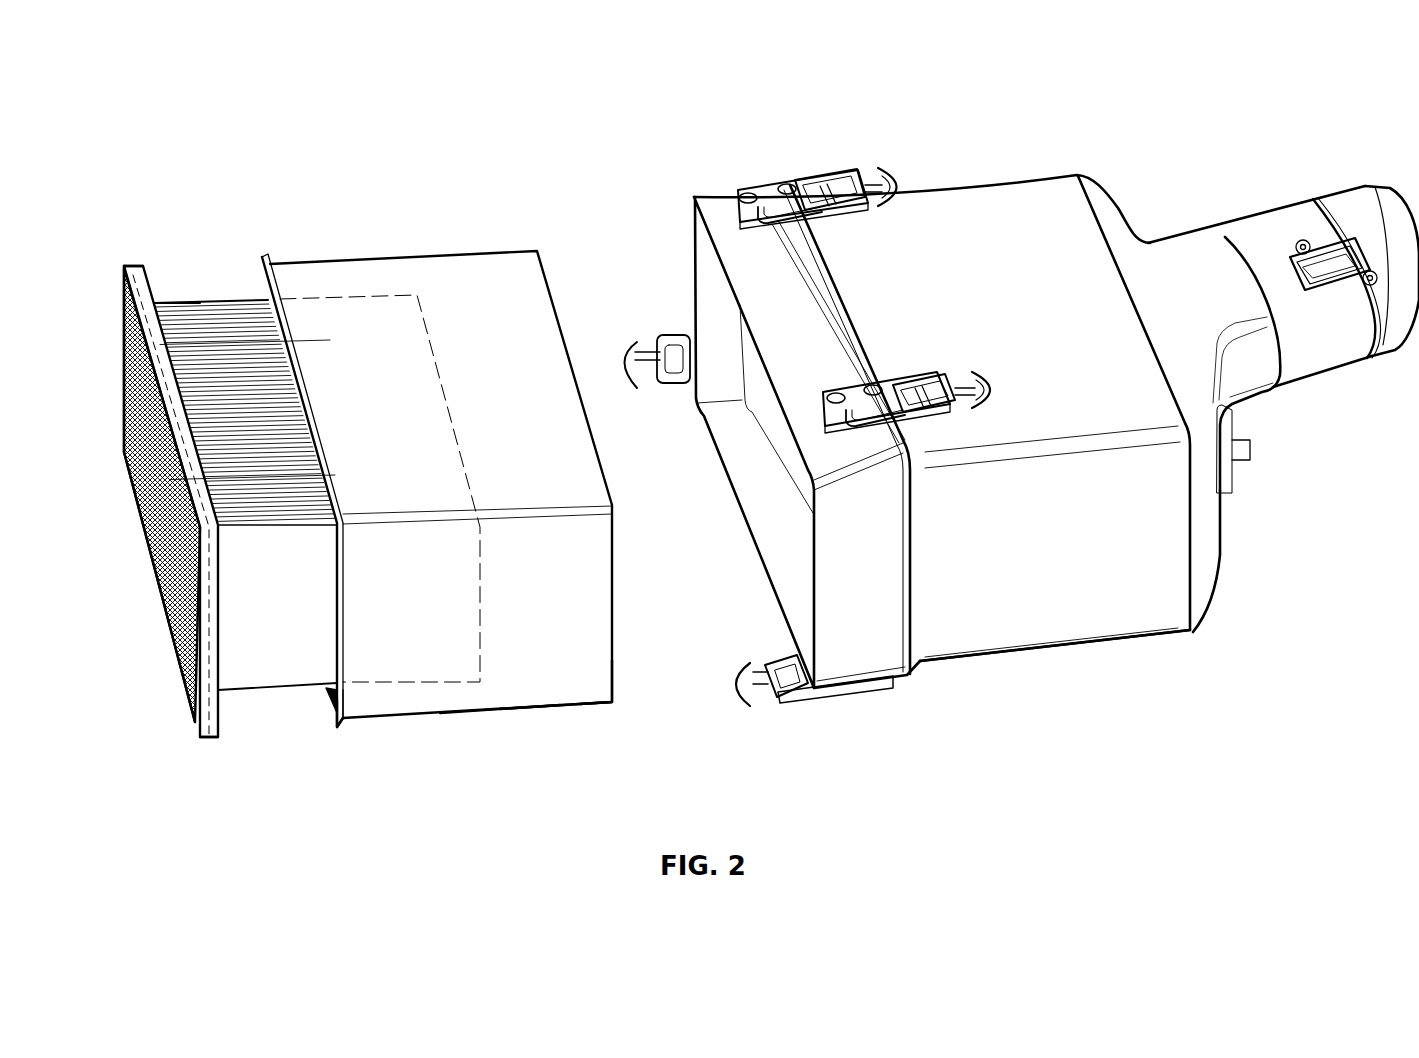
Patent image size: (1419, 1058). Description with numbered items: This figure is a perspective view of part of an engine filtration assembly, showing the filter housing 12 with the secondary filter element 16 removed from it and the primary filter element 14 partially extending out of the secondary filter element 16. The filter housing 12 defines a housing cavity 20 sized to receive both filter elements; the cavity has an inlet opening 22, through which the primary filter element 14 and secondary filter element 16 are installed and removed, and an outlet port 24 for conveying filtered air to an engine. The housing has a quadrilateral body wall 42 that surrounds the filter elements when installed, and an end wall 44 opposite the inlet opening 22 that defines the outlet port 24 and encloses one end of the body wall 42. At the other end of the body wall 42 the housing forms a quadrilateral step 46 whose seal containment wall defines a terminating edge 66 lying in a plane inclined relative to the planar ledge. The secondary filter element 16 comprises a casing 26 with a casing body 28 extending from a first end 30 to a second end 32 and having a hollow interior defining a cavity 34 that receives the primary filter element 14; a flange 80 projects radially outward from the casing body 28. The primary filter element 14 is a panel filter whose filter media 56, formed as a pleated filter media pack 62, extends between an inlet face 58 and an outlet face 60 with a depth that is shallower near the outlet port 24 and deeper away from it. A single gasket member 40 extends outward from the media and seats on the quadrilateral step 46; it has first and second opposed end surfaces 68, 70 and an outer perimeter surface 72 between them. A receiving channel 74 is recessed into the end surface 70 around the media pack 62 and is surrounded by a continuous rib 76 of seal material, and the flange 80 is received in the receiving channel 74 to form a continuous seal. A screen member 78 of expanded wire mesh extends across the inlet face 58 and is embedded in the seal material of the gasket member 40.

The filter housing 12 is at (979, 173).
The primary filter element 14 is at (247, 291).
The secondary filter element 16 is at (383, 226).
The housing cavity 20 is at (771, 581).
The inlet opening 22 is at (741, 453).
The outlet port 24 is at (1367, 200).
The casing 26 is at (493, 717).
The casing body 28 is at (548, 711).
The first end 30 is at (337, 752).
The second end 32 is at (622, 712).
The cavity 34 is at (327, 698).
The gasket member 40 is at (121, 256).
The quadrilateral body wall 42 is at (1135, 640).
The end wall 44 is at (1192, 547).
The quadrilateral step 46 is at (916, 674).
The filter media 56 is at (248, 399).
The inlet face 58 is at (138, 477).
The outlet face 60 is at (427, 328).
The pleated filter media pack 62 is at (270, 461).
The terminating edge 66 is at (690, 250).
The first end surface 68 is at (123, 293).
The second end surface 70 is at (143, 267).
The outer perimeter surface 72 is at (213, 738).
The receiving channel 74 is at (150, 293).
The continuous rib 76 is at (160, 330).
The screen member 78 is at (157, 545).
The flange 80 is at (345, 722).